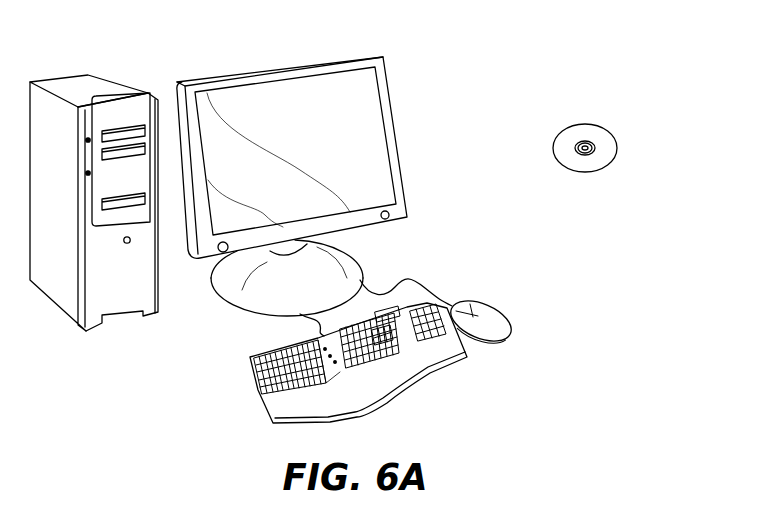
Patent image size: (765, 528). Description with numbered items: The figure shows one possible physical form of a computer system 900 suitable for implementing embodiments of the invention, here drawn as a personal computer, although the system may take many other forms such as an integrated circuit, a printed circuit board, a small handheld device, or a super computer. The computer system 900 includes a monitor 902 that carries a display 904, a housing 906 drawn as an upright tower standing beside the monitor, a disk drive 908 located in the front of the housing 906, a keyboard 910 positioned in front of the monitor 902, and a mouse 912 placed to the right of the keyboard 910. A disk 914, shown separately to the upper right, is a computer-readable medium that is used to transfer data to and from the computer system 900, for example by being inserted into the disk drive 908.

The computer system 900 is at (514, 40).
The monitor 902 is at (401, 157).
The display 904 is at (357, 96).
The housing 906 is at (80, 85).
The disk drive 908 is at (142, 197).
The keyboard 910 is at (262, 393).
The mouse 912 is at (500, 317).
The disk 914 is at (597, 127).